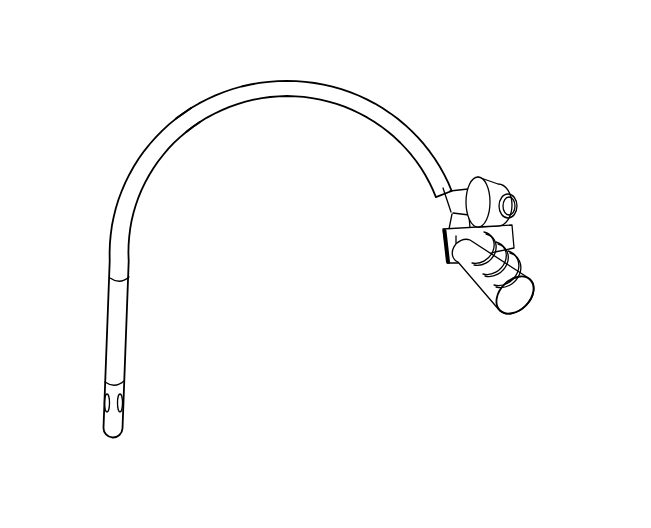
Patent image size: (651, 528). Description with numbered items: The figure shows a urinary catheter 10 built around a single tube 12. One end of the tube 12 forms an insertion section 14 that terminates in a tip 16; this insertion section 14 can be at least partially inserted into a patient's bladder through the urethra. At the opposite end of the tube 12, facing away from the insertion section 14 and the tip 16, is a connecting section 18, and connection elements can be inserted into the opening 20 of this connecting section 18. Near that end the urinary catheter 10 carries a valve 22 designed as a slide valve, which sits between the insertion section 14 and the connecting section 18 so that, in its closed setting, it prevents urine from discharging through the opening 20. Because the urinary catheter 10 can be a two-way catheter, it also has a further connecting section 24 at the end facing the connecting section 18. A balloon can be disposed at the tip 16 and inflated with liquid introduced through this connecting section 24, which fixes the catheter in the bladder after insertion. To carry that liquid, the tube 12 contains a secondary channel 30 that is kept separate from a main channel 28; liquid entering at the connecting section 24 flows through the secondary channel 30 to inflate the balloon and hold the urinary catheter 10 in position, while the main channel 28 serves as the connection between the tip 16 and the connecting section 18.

The urinary catheter 10 is at (85, 145).
The tube 12 is at (327, 92).
The insertion section 14 is at (120, 312).
The tip 16 is at (113, 422).
The connecting section 18 is at (503, 268).
The opening 20 is at (519, 303).
The valve 22 is at (454, 265).
The connecting section 24 is at (497, 185).
The main channel 28 is at (181, 114).
The secondary channel 30 is at (193, 127).